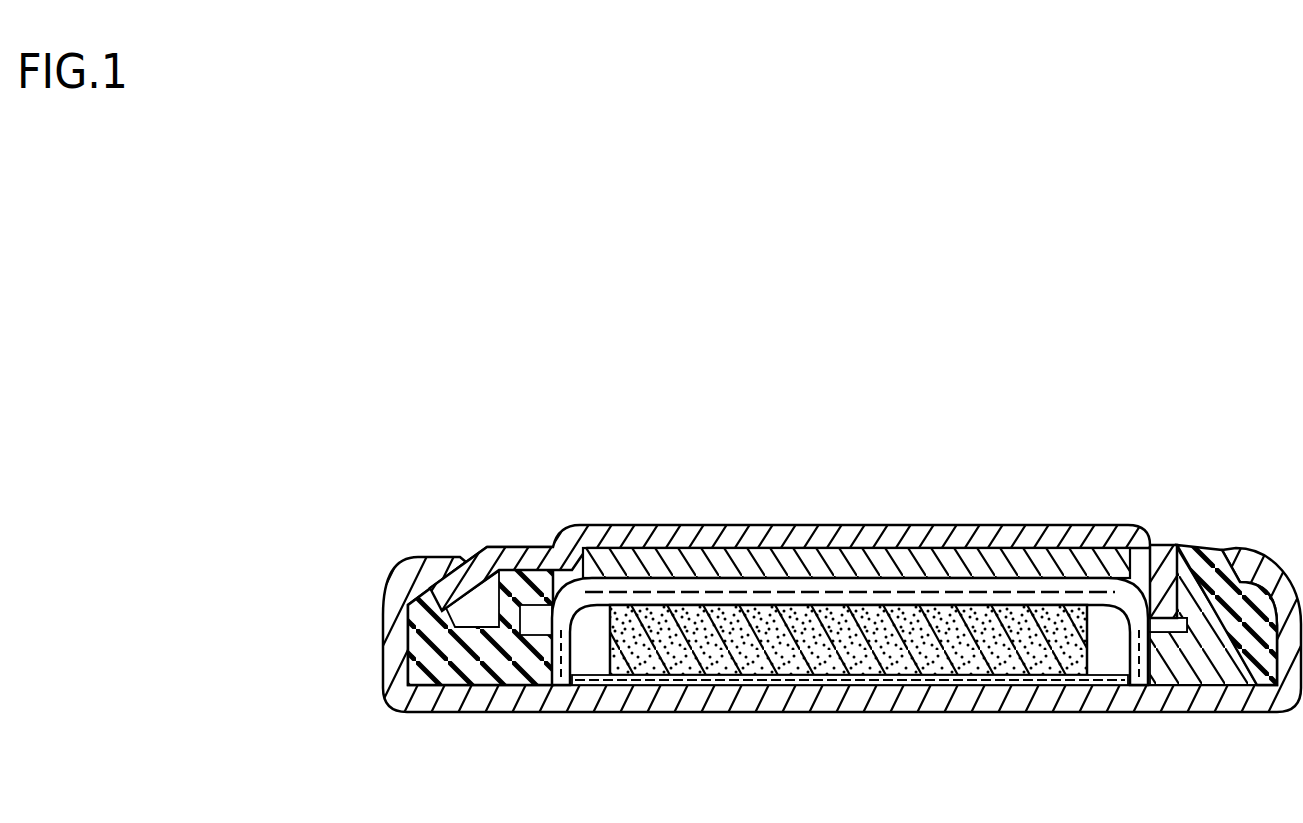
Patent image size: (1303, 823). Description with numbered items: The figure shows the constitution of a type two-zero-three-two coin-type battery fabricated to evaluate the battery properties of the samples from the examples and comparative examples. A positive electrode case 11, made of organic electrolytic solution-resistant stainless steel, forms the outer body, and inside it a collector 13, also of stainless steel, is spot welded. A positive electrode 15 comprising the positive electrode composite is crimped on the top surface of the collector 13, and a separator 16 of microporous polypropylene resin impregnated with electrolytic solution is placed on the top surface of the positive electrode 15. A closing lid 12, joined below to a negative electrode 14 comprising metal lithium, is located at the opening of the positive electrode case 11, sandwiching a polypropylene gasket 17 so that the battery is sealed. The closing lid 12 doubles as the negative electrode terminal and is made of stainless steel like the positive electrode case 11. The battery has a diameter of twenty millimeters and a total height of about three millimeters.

The positive electrode case 11 is at (610, 690).
The closing lid 12 is at (632, 527).
The collector 13 is at (1010, 713).
The negative electrode 14 is at (727, 570).
The positive electrode 15 is at (912, 635).
The separator 16 is at (820, 594).
The gasket 17 is at (1187, 542).